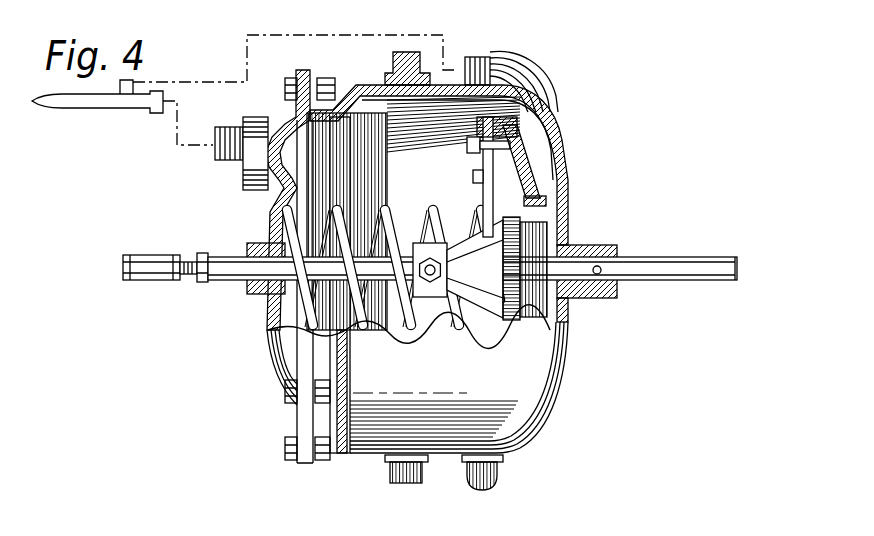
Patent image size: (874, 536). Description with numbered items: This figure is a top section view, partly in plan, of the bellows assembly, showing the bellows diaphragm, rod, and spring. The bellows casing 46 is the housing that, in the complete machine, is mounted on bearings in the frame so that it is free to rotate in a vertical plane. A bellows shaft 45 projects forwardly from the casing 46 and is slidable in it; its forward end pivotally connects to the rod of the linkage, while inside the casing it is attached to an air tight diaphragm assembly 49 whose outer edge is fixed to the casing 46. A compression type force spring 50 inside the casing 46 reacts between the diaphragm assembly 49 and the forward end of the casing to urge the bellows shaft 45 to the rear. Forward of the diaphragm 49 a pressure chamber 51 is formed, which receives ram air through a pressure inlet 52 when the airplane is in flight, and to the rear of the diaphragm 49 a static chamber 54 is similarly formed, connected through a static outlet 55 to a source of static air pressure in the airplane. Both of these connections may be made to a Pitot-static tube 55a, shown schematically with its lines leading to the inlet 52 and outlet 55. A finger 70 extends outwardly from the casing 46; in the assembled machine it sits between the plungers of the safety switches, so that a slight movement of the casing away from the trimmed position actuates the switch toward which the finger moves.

The bellows shaft 45 is at (238, 265).
The bellows casing 46 is at (533, 387).
The diaphragm assembly 49 is at (480, 195).
The force spring 50 is at (390, 232).
The pressure chamber 51 is at (413, 213).
The pressure inlet 52 is at (215, 140).
The static chamber 54 is at (520, 128).
The static outlet 55 is at (505, 65).
The Pitot-static tube 55a is at (53, 108).
The finger 70 is at (483, 477).